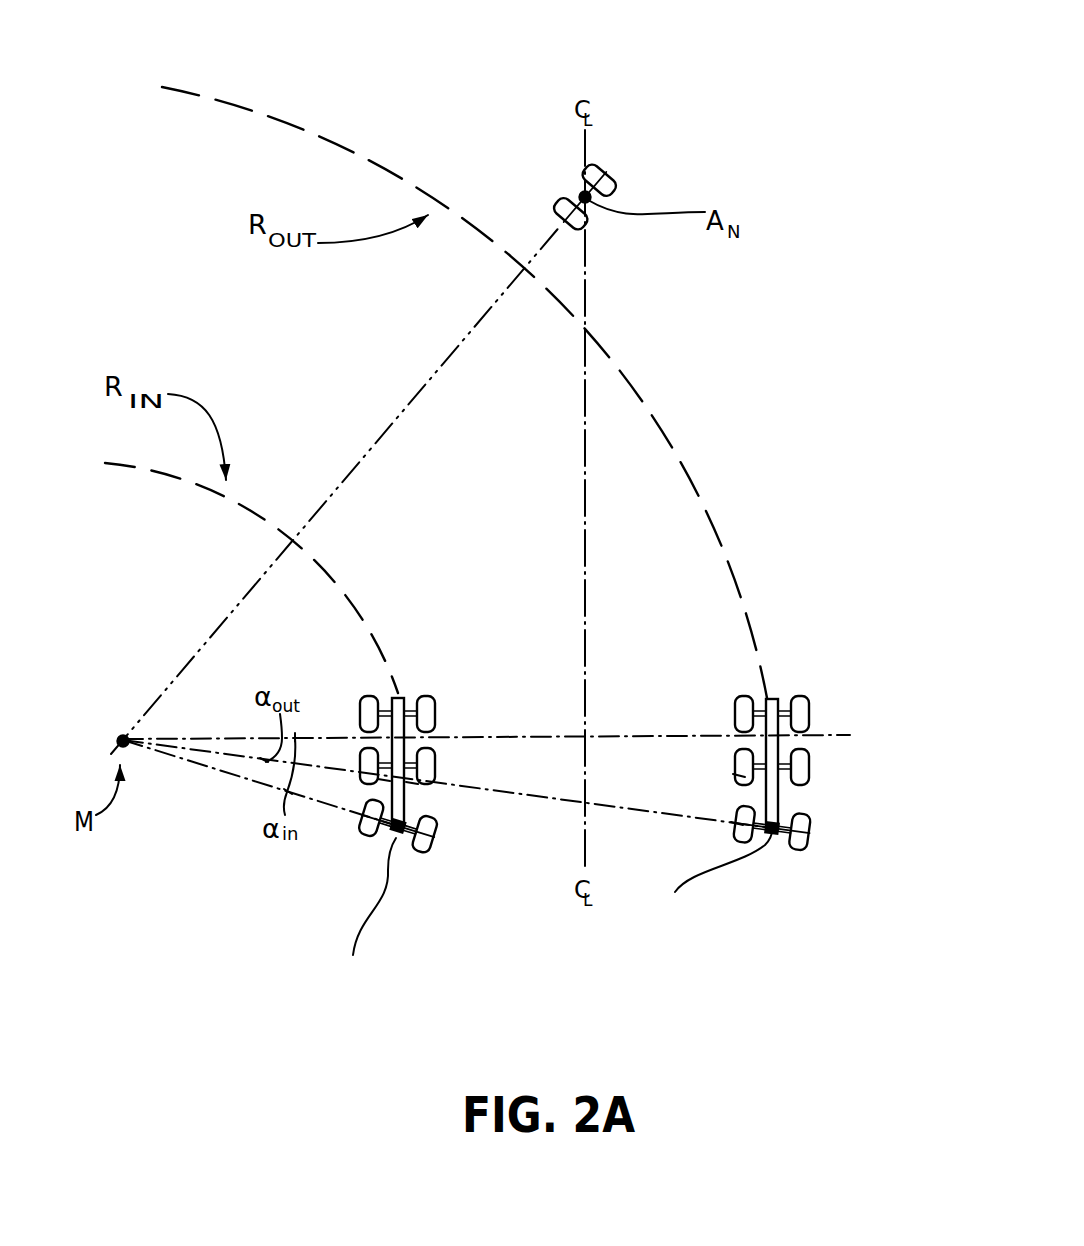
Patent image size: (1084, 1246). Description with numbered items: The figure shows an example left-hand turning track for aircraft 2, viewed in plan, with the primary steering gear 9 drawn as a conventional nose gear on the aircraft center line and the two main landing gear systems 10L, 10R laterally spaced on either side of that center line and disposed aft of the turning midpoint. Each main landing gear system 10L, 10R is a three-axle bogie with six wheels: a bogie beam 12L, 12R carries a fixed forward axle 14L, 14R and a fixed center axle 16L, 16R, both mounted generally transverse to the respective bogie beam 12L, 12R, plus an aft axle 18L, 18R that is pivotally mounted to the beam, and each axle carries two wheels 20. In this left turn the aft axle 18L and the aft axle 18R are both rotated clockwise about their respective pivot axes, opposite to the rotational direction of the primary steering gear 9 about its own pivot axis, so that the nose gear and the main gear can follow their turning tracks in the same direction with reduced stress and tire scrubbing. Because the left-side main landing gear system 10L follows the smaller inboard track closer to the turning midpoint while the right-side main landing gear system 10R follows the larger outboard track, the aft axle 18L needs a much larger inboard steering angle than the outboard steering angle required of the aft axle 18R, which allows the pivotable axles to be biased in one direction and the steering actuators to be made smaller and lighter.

The aircraft 2 is at (813, 118).
The primary steering gear 9 is at (556, 185).
The left-side main landing gear system 10L is at (361, 853).
The right-side main landing gear system 10R is at (760, 860).
The left bogie beam 12L is at (403, 698).
The right bogie beam 12R is at (773, 700).
The left fixed forward axle 14L is at (440, 706).
The right fixed forward axle 14R is at (814, 708).
The left fixed center axle 16L is at (440, 762).
The right fixed center axle 16R is at (814, 778).
The left aft axle 18L is at (440, 845).
The right aft axle 18R is at (814, 836).
The wheels 20 is at (412, 786).